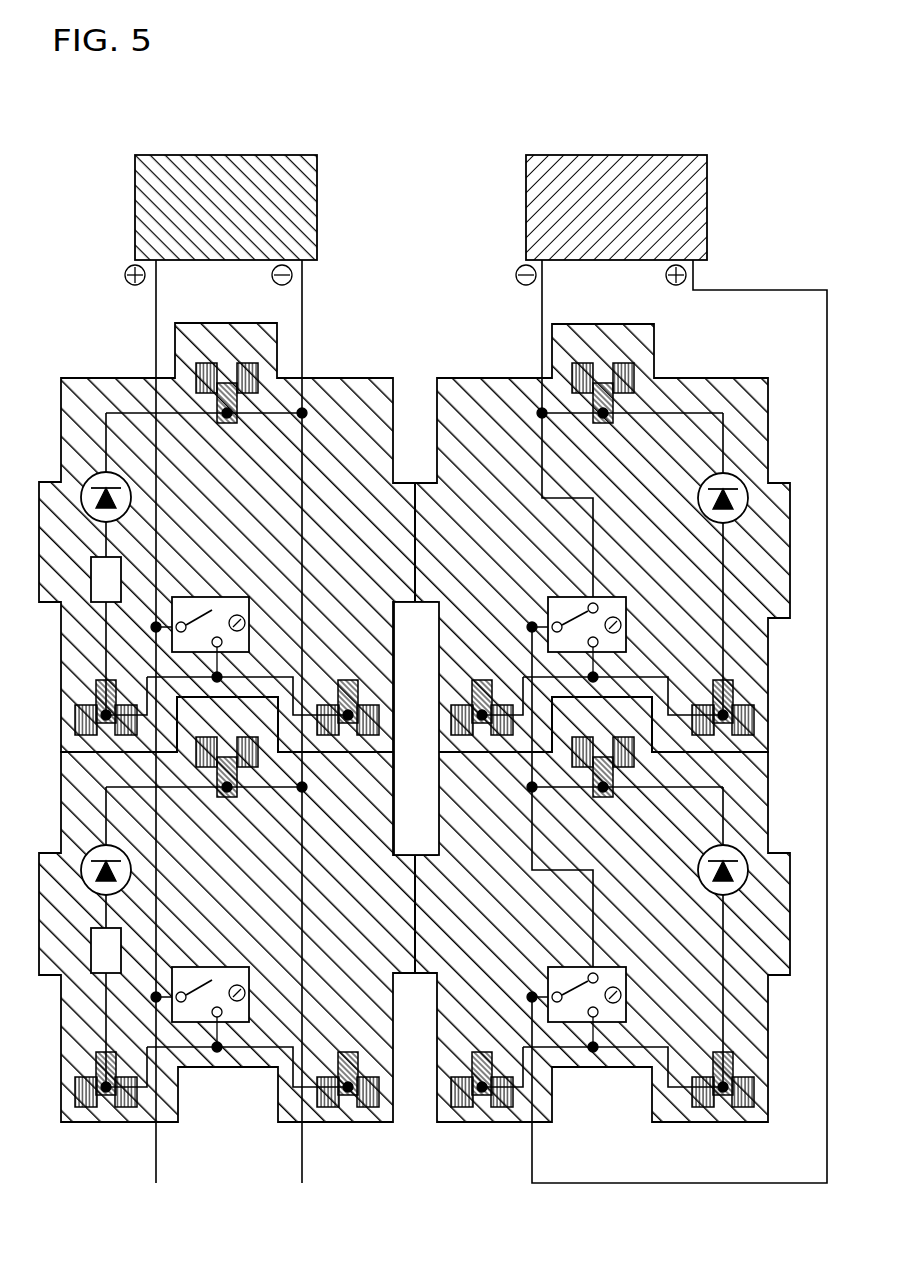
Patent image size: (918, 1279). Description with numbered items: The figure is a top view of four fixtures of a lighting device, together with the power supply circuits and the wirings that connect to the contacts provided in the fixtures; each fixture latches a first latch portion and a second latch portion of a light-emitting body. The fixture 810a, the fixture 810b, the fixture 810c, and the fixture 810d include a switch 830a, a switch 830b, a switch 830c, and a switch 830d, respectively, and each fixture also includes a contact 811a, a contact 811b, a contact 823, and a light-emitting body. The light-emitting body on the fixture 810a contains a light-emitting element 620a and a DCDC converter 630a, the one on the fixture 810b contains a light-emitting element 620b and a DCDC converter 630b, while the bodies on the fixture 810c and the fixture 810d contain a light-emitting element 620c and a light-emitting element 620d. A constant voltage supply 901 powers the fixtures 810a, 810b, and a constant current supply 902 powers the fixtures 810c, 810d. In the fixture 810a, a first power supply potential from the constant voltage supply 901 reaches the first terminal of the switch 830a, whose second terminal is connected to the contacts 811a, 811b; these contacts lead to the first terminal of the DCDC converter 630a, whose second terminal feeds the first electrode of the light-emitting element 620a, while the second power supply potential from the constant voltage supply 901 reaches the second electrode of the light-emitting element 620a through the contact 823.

The constant voltage supply 901 is at (206, 223).
The constant current supply 902 is at (596, 223).
The light-emitting element 620a is at (80, 477).
The light-emitting element 620b is at (80, 849).
The light-emitting element 620c is at (693, 480).
The light-emitting element 620d is at (691, 851).
The DCDC converter 630a is at (75, 561).
The DCDC converter 630b is at (75, 932).
The fixture 810a is at (250, 556).
The fixture 810b is at (250, 926).
The fixture 810c is at (655, 556).
The fixture 810d is at (655, 926).
The contact 811a is at (271, 864).
The contact 811b is at (540, 858).
The contact 823 is at (416, 620).
The switch 830a is at (231, 625).
The switch 830b is at (231, 995).
The switch 830c is at (607, 625).
The switch 830d is at (607, 995).